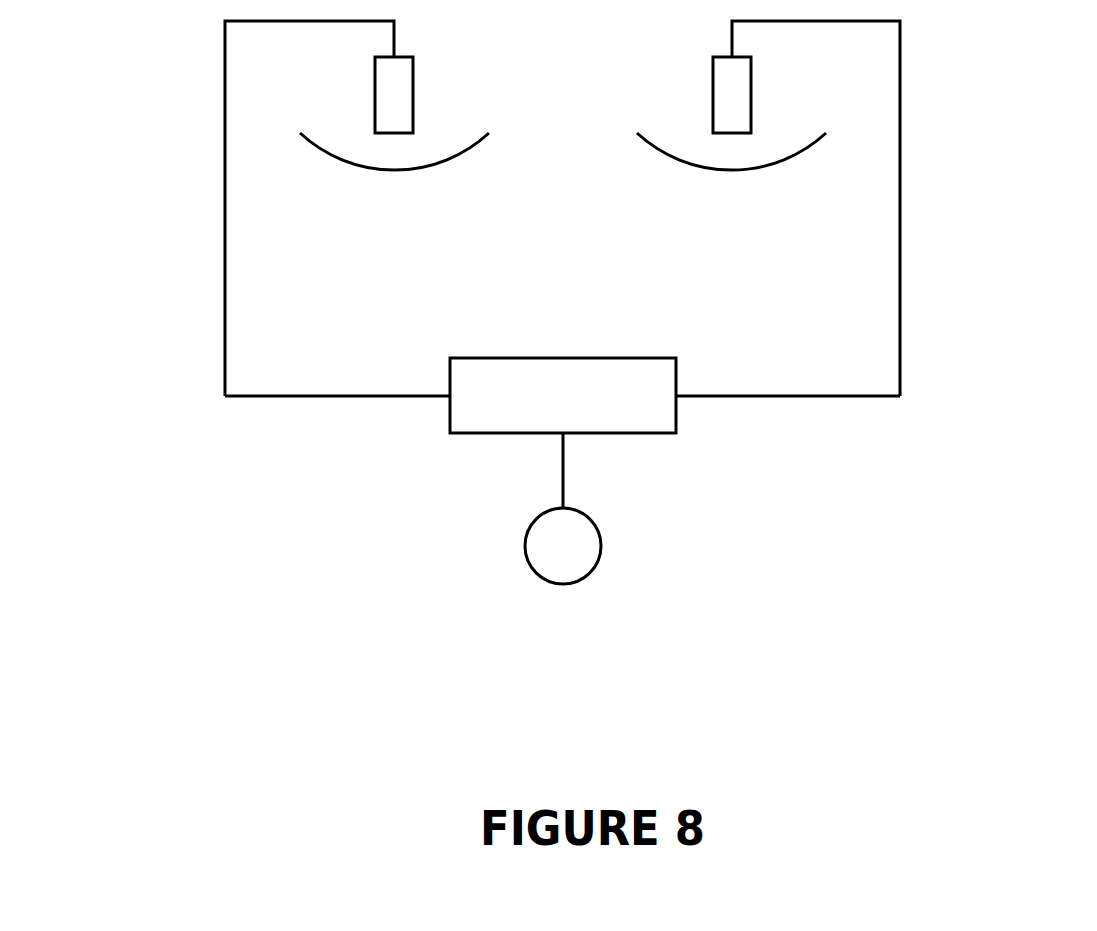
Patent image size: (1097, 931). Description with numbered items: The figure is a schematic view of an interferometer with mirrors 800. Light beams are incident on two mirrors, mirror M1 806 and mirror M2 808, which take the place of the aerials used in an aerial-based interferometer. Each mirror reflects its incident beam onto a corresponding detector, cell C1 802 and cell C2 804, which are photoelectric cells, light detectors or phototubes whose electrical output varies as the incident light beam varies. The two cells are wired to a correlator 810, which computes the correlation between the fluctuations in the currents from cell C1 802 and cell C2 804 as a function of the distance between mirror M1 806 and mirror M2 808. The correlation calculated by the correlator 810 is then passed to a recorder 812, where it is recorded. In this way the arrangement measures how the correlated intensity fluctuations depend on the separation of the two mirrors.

The interferometer with mirrors 800 is at (826, 585).
The cell C1 802 is at (386, 95).
The cell C2 804 is at (740, 95).
The mirror M1 806 is at (397, 171).
The mirror M2 808 is at (735, 171).
The correlator 810 is at (563, 395).
The recorder 812 is at (591, 545).